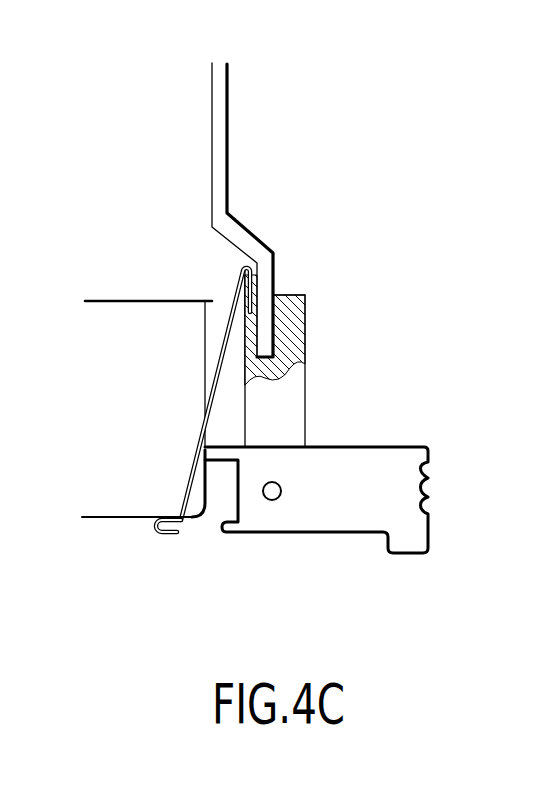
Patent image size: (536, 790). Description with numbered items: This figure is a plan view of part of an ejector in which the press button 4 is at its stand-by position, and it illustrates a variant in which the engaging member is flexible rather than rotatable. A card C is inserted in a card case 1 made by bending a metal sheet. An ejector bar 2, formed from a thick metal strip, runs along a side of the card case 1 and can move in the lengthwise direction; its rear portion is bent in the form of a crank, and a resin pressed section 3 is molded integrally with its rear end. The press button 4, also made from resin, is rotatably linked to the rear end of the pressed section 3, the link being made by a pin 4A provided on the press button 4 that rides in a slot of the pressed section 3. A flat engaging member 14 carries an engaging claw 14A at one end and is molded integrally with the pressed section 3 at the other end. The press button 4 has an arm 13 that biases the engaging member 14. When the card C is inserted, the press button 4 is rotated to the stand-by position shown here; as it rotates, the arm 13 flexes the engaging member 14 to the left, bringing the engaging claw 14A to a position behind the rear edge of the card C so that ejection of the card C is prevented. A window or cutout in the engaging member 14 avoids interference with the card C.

The card case 1 is at (172, 158).
The ejector bar 2 is at (218, 93).
The pressed section 3 is at (280, 312).
The arm 13 is at (209, 459).
The press button 4 is at (340, 457).
The pin 4A is at (276, 496).
The engaging member 14 is at (219, 362).
The engaging claw 14A is at (168, 535).
The card C is at (93, 500).